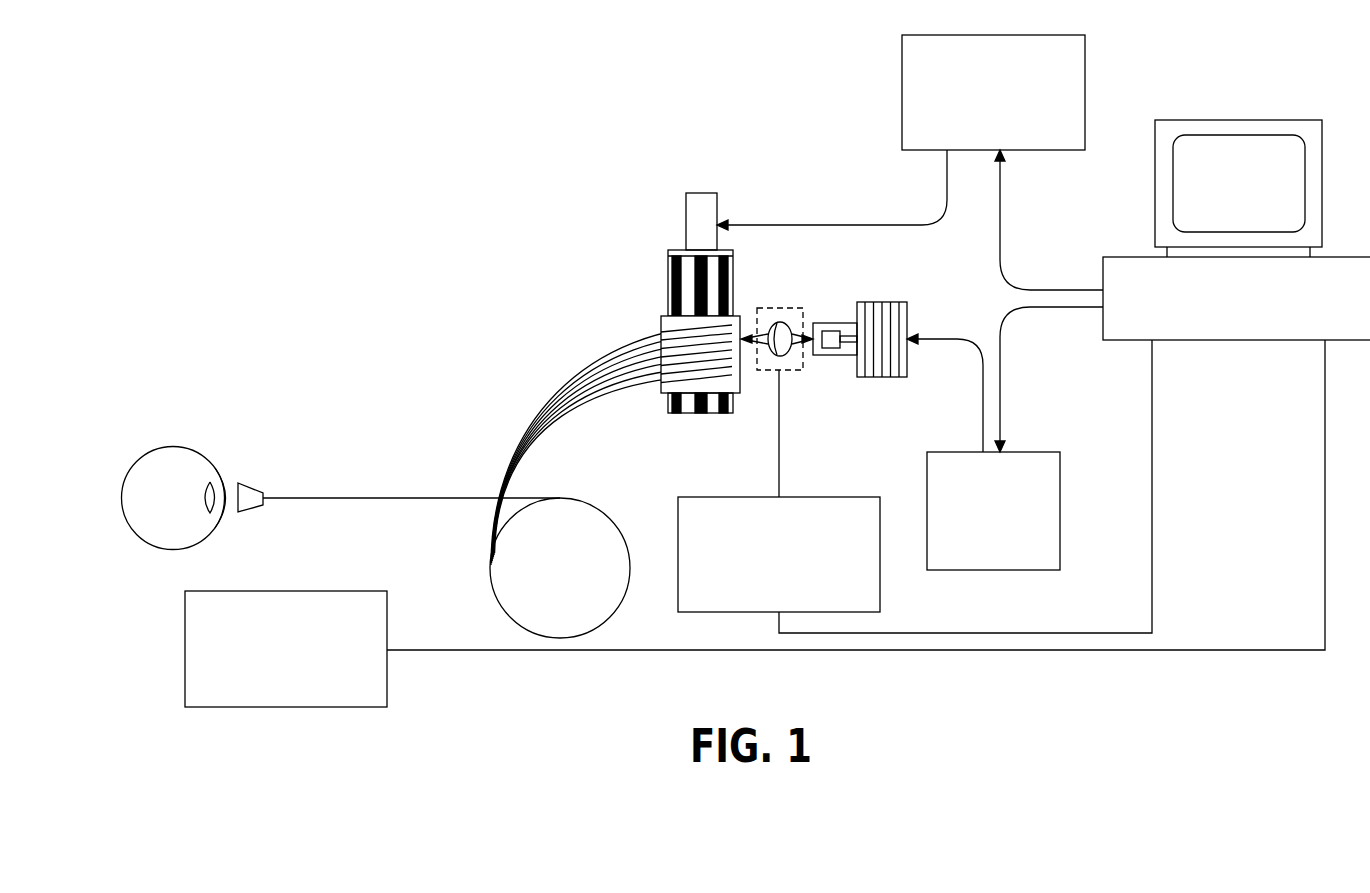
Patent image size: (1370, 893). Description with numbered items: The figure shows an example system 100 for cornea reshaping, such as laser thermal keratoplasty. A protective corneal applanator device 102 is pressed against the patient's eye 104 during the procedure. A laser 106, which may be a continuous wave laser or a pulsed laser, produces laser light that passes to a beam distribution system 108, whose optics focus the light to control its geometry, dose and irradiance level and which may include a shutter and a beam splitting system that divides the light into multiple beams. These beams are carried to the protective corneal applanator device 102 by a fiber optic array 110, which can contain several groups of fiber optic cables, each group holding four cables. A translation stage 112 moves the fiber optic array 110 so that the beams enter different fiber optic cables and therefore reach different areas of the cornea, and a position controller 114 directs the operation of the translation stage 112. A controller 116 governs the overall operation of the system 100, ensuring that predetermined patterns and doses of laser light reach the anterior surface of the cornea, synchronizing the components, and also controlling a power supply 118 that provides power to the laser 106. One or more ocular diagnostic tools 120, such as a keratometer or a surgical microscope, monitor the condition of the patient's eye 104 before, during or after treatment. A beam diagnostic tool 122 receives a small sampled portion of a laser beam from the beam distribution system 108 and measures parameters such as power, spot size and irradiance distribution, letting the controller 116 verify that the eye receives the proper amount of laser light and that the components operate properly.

The system for cornea reshaping 100 is at (484, 149).
The protective corneal applanator device 102 is at (250, 483).
The patient's eye 104 is at (173, 447).
The laser 106 is at (885, 302).
The beam distribution system 108 is at (782, 308).
The fiber optic array 110 is at (540, 405).
The translation stage 112 is at (668, 267).
The position controller 114 is at (902, 91).
The controller 116 is at (1237, 341).
The power supply 118 is at (1032, 452).
The ocular diagnostic tools 120 is at (303, 590).
The beam diagnostic tool 122 is at (722, 497).